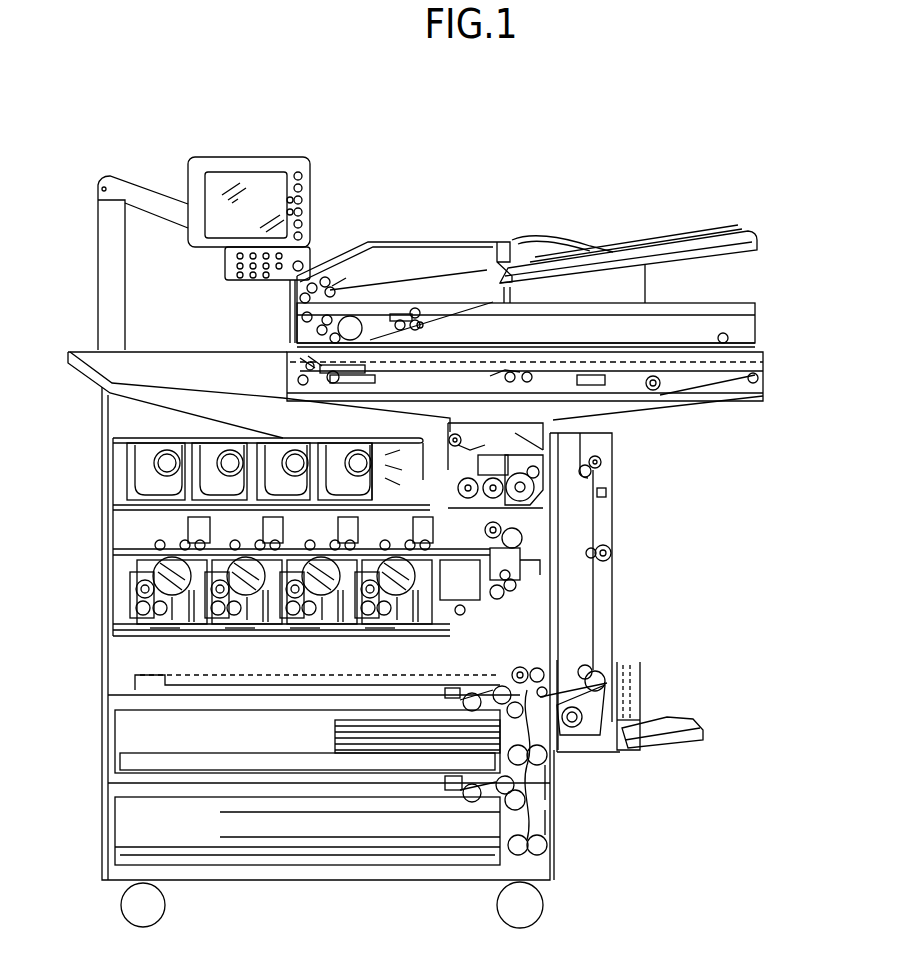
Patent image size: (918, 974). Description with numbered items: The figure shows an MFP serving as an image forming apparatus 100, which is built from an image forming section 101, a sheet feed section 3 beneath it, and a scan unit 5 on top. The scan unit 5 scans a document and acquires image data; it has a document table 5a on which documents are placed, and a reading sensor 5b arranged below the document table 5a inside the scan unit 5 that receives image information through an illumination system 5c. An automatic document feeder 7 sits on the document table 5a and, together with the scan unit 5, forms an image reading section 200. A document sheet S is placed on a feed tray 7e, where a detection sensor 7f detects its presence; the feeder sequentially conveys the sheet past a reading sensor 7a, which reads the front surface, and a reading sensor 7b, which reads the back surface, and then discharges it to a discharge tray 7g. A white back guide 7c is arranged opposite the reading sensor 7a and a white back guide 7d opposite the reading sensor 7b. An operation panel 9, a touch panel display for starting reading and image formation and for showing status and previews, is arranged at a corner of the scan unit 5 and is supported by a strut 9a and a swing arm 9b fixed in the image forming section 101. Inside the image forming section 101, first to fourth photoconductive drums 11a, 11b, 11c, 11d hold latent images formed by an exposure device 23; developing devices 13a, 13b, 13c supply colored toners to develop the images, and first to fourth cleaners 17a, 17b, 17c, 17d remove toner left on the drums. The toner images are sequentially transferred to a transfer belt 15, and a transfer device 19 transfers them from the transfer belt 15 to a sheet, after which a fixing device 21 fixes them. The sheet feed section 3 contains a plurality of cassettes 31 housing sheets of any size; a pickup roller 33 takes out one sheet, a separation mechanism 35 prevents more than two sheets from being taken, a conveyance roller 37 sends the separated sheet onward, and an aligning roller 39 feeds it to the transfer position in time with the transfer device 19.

The image forming apparatus 100 is at (644, 139).
The image forming section 101 is at (668, 498).
The image reading section 200 is at (783, 395).
The sheet feed section 3 is at (713, 660).
The scan unit 5 is at (765, 347).
The document table 5a is at (484, 343).
The reading sensor 5b is at (618, 376).
The illumination system 5c is at (287, 352).
The automatic document feeder 7 is at (355, 263).
The reading sensor 7a is at (367, 335).
The reading sensor 7b is at (416, 308).
The white back guide 7c is at (346, 319).
The white back guide 7d is at (422, 328).
The feed tray 7e is at (718, 233).
The detection sensor 7f is at (500, 240).
The discharge tray 7g is at (688, 300).
The operation panel 9 is at (312, 180).
The strut 9a is at (125, 288).
The swing arm 9b is at (146, 182).
The document sheet S is at (648, 237).
The fixing device 21 is at (487, 421).
The first cleaner 17a is at (432, 615).
The second cleaner 17b is at (326, 533).
The third cleaner 17c is at (256, 533).
The fourth cleaner 17d is at (301, 537).
The first photoconductive drum 11a is at (411, 632).
The second photoconductive drum 11b is at (331, 632).
The third photoconductive drum 11c is at (266, 632).
The fourth photoconductive drum 11d is at (192, 632).
The developing device 13a is at (376, 632).
The developing device 13b is at (165, 632).
The developing device 13c is at (236, 632).
The transfer belt 15 is at (494, 520).
The transfer device 19 is at (522, 546).
The exposure device 23 is at (300, 690).
The cassette 31 is at (260, 735).
The pickup roller 33 is at (466, 692).
The separation mechanism 35 is at (498, 685).
The conveyance roller 37 is at (560, 665).
The aligning roller 39 is at (505, 602).